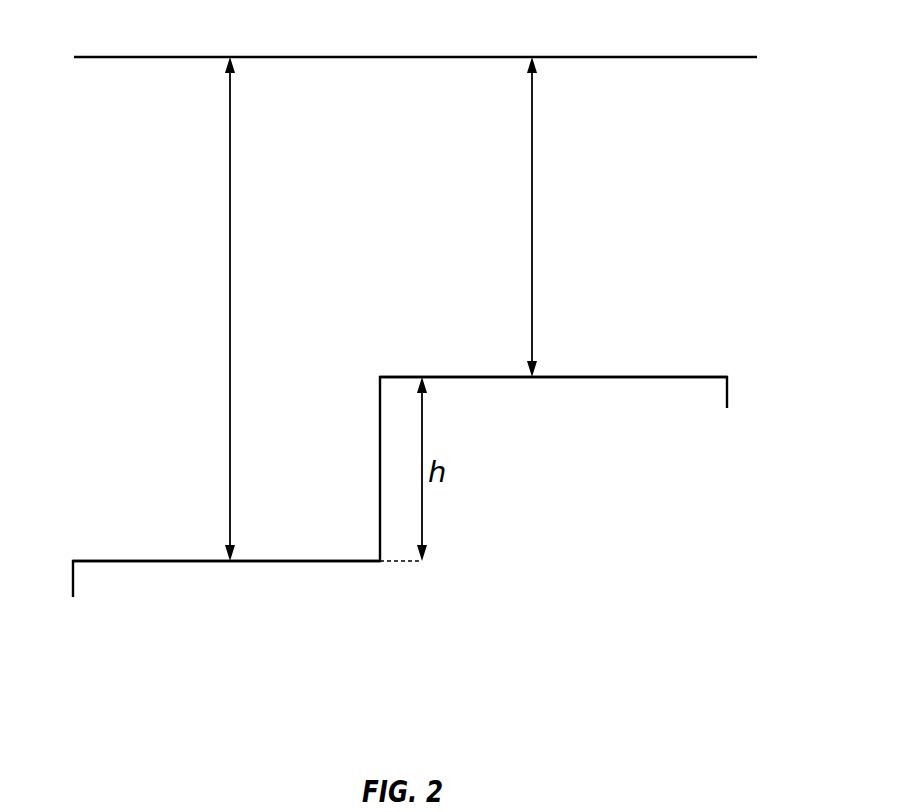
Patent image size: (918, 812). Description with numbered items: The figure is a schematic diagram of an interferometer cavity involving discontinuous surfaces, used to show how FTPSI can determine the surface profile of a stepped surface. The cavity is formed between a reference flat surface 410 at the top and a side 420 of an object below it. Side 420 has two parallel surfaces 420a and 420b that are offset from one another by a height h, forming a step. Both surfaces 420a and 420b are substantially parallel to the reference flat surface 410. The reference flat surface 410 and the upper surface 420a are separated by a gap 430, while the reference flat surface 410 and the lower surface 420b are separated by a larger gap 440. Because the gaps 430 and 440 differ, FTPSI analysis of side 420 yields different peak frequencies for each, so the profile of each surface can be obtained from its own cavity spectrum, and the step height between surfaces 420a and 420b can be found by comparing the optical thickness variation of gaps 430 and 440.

The reference flat surface 410 is at (652, 57).
The side 420 is at (603, 378).
The surface 420a is at (655, 377).
The surface 420b is at (148, 561).
The gap 430 is at (532, 203).
The gap 440 is at (230, 250).